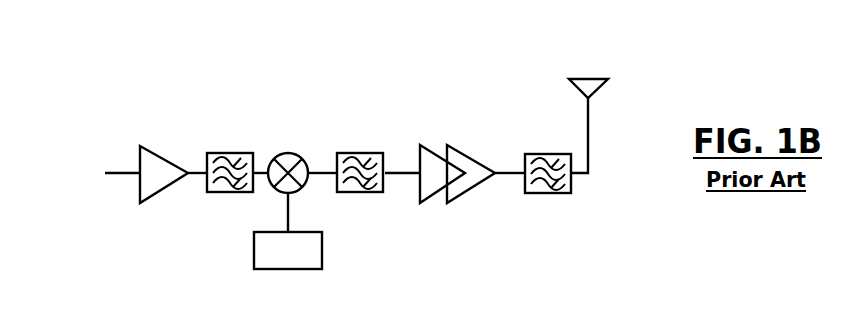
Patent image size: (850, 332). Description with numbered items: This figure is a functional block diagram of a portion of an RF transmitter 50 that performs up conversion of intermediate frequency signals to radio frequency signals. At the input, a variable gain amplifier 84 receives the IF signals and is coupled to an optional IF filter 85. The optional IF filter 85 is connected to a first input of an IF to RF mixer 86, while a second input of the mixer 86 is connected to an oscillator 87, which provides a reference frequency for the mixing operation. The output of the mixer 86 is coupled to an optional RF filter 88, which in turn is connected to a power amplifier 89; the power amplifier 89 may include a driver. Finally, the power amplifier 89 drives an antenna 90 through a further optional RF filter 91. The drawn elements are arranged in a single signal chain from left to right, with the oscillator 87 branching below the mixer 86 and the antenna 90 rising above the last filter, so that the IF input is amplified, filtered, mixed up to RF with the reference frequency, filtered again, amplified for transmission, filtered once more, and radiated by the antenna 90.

The RF transmitter 50 is at (197, 51).
The variable gain amplifier 84 is at (163, 155).
The IF filter 85 is at (225, 153).
The IF to RF mixer 86 is at (292, 153).
The oscillator 87 is at (290, 270).
The RF filter 88 is at (357, 153).
The power amplifier 89 is at (478, 157).
The antenna 90 is at (598, 87).
The RF filter 91 is at (543, 193).